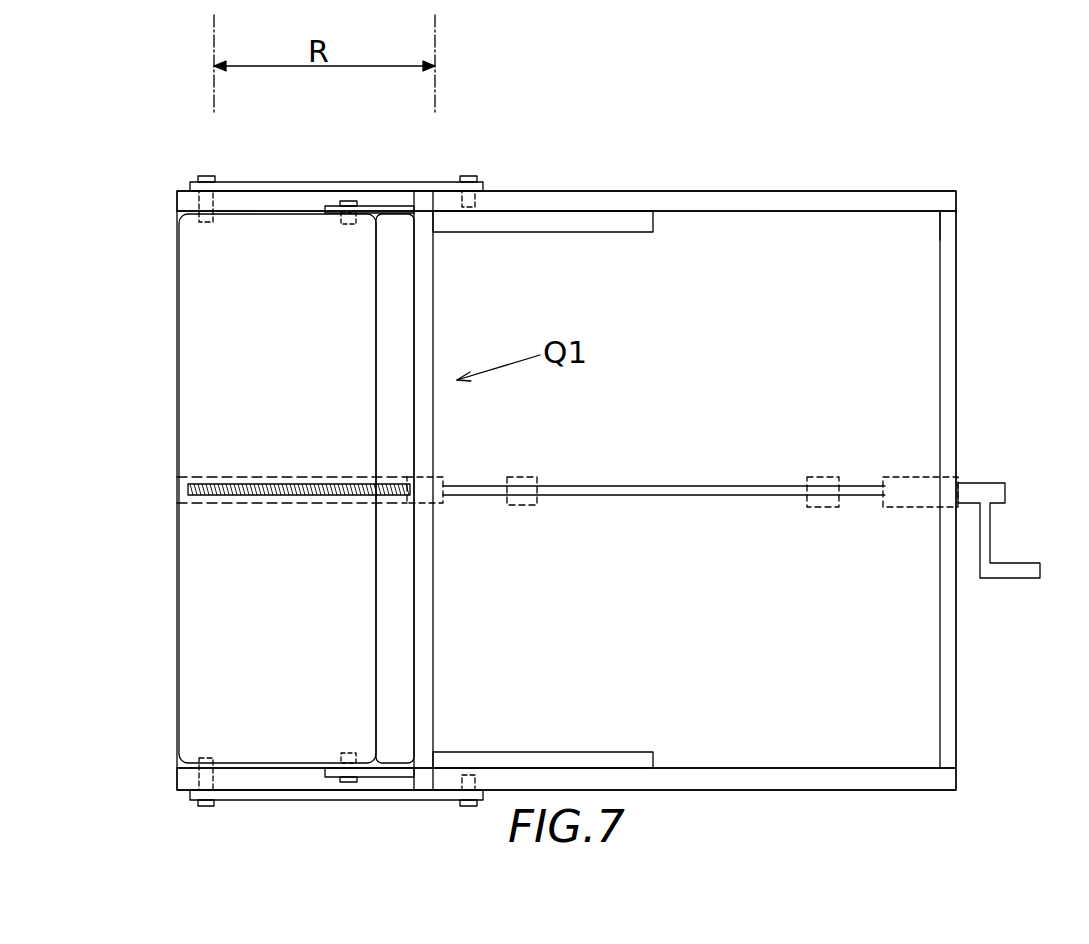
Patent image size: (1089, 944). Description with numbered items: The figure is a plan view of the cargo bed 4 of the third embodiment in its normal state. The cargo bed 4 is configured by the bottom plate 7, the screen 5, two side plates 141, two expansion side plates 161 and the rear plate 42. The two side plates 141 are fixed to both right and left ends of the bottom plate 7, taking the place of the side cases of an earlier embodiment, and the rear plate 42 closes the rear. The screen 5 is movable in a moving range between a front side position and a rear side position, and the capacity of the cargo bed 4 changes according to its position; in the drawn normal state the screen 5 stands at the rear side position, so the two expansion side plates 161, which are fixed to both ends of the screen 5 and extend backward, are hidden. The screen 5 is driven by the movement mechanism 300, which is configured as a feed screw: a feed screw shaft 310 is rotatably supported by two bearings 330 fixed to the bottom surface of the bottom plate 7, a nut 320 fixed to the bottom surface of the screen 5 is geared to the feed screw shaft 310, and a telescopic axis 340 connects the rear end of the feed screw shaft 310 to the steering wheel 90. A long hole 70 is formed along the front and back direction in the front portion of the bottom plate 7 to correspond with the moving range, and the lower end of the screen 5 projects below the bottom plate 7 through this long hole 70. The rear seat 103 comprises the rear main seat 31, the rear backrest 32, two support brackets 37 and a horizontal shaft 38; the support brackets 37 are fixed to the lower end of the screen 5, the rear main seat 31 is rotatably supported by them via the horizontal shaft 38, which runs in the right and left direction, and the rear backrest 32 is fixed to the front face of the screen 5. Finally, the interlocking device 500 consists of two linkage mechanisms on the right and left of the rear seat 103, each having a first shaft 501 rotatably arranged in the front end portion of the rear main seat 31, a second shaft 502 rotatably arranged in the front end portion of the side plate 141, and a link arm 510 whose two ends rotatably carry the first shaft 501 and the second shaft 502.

The cargo bed 4 is at (709, 80).
The screen 5 is at (433, 316).
The bottom plate 7 is at (925, 370).
The rear main seat 31 is at (185, 575).
The rear backrest 32 is at (390, 627).
The support bracket 37 is at (393, 212).
The horizontal shaft 38 is at (348, 224).
The rear plate 42 is at (940, 232).
The long hole 70 is at (285, 477).
The steering wheel 90 is at (985, 532).
The rear seat 103 is at (257, 488).
The side plate 141 is at (785, 195).
The expansion side plate 161 is at (618, 228).
The movement mechanism 300 is at (667, 440).
The feed screw shaft 310 is at (484, 477).
The nut 320 is at (422, 505).
The bearing 330 is at (528, 506).
The telescopic axis 340 is at (897, 508).
The interlocking device 500 is at (312, 172).
The first shaft 501 is at (205, 176).
The second shaft 502 is at (470, 176).
The link arm 510 is at (367, 190).